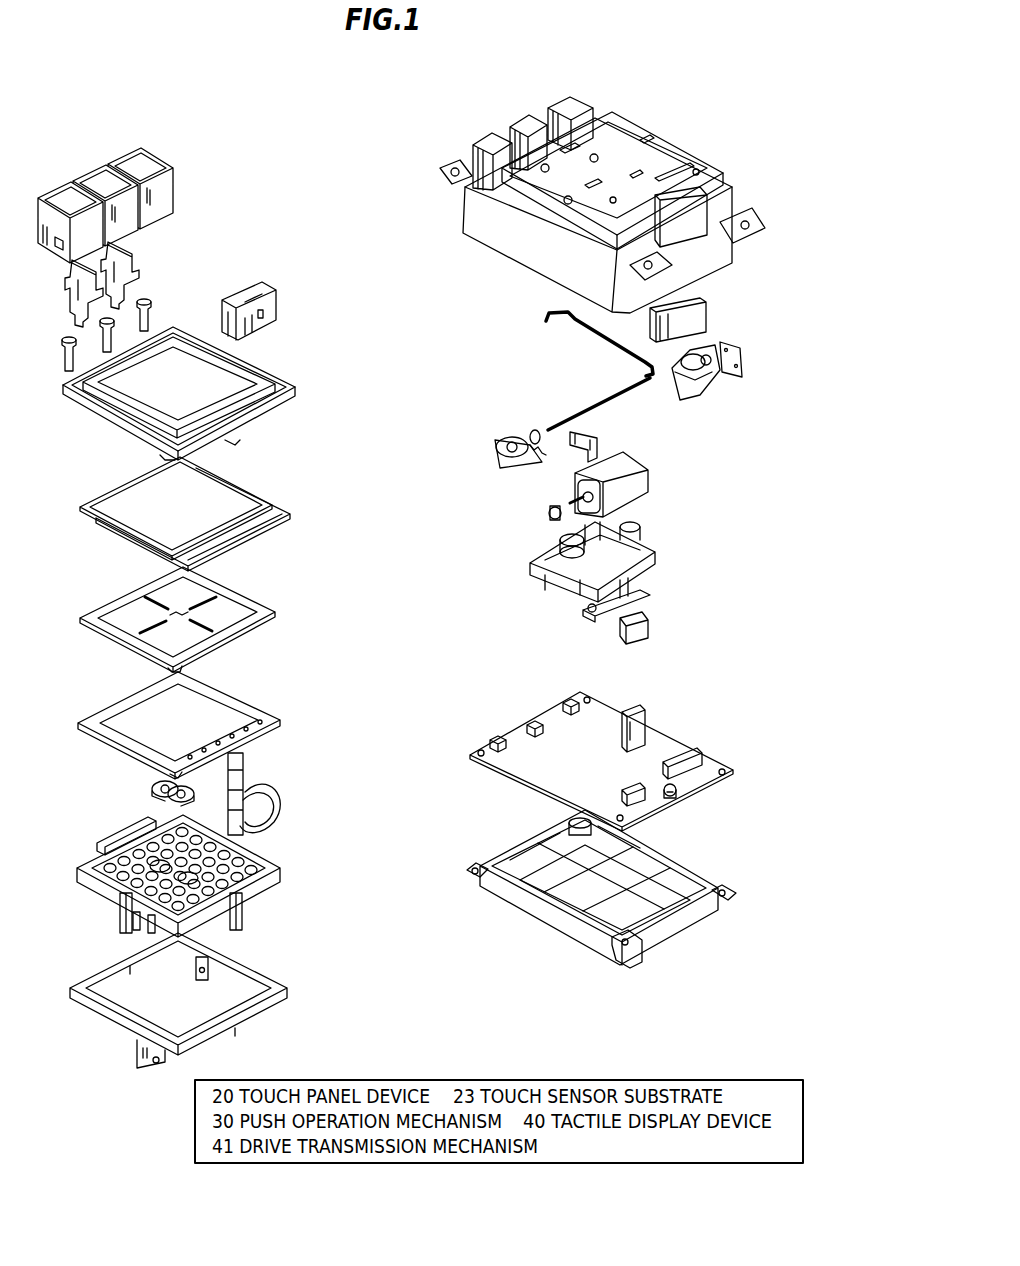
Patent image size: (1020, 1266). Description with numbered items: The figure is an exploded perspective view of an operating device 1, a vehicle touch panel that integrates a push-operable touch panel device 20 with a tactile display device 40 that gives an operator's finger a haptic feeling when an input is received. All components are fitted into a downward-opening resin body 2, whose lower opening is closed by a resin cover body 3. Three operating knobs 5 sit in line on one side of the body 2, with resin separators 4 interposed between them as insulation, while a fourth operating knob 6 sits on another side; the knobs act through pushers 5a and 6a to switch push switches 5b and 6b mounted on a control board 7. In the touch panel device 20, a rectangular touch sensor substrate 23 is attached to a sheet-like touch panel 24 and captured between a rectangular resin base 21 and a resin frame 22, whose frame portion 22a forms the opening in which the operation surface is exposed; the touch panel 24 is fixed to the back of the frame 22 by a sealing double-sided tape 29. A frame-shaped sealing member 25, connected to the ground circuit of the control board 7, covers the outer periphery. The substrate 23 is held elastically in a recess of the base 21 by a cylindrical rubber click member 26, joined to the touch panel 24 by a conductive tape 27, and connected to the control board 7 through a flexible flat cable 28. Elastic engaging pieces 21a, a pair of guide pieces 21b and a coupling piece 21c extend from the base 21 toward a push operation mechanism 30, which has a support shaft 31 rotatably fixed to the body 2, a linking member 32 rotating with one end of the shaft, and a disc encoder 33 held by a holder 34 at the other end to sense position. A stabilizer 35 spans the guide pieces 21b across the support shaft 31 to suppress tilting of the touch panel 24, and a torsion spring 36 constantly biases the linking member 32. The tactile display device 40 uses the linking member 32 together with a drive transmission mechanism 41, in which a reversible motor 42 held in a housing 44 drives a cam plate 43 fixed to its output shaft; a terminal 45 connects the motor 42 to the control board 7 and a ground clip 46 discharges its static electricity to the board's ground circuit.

The operating device 1 is at (257, 104).
The body 2 is at (507, 247).
The cover body 3 is at (578, 943).
The separator 4 is at (128, 263).
The operating knob 5 is at (130, 165).
The pusher 5a is at (148, 312).
The push switch 5b is at (567, 703).
The fourth operating knob 6 is at (267, 285).
The pusher 6a is at (694, 317).
The push switch 6b is at (676, 794).
The control board 7 is at (520, 770).
The touch panel device 20 is at (323, 408).
The base 21 is at (258, 852).
The elastic engaging piece 21a is at (150, 922).
The guide piece 21b is at (242, 913).
The coupling piece 21c is at (117, 910).
The frame 22 is at (220, 434).
The frame portion 22a is at (254, 413).
The touch sensor substrate 23 is at (222, 689).
The touch panel 24 is at (243, 594).
The sealing member 25 is at (270, 970).
The click member 26 is at (152, 786).
The conductive tape 27 is at (238, 537).
The flexible flat cable 28 is at (265, 783).
The double-sided tape 29 is at (242, 487).
The push operation mechanism 30 is at (480, 322).
The support shaft 31 is at (603, 398).
The linking member 32 is at (512, 435).
The disc encoder 33 is at (748, 360).
The holder 34 is at (704, 384).
The stabilizer 35 is at (578, 338).
The torsion spring 36 is at (533, 432).
The tactile display device 40 is at (716, 453).
The drive transmission mechanism 41 is at (488, 483).
The motor 42 is at (573, 482).
The cam plate 43 is at (546, 512).
The housing 44 is at (650, 553).
The terminal 45 is at (644, 590).
The ground clip 46 is at (598, 440).